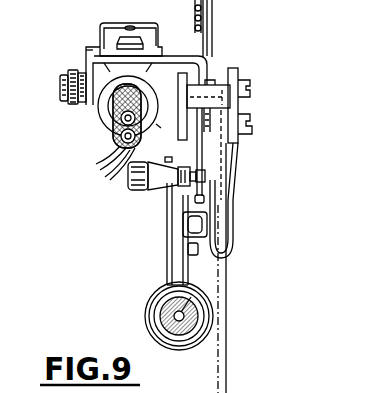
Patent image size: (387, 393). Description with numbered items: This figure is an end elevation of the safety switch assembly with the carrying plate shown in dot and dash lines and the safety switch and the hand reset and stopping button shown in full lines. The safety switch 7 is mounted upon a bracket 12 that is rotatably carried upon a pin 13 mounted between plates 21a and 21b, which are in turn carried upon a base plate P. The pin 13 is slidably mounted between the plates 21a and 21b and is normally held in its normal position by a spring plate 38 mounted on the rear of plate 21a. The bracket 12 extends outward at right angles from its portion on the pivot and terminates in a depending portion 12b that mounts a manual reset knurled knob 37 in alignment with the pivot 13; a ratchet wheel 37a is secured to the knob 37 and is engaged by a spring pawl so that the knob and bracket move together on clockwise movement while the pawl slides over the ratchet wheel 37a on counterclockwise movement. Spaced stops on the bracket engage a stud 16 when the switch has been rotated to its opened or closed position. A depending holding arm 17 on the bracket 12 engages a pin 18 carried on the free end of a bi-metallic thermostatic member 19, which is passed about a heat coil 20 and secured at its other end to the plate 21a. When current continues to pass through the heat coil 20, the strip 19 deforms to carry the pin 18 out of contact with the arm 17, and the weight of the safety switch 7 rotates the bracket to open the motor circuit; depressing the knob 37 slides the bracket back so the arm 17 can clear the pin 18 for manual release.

The safety switch 7 is at (103, 124).
The bracket 12 is at (186, 59).
The depending portion of the bracket 12b is at (88, 66).
The pin 13 is at (207, 82).
The stud 16 is at (213, 112).
The depending holding arm 17 is at (194, 148).
The pin 18 is at (205, 176).
The bi-metallic thermostatic member 19 is at (166, 240).
The heat coil 20 is at (150, 317).
The plate 21a is at (178, 88).
The plate 21b is at (236, 206).
The manual reset knurled knob 37 is at (60, 86).
The ratchet wheel 37a is at (86, 102).
The spring plate 38 is at (240, 82).
The base plate P is at (228, 348).